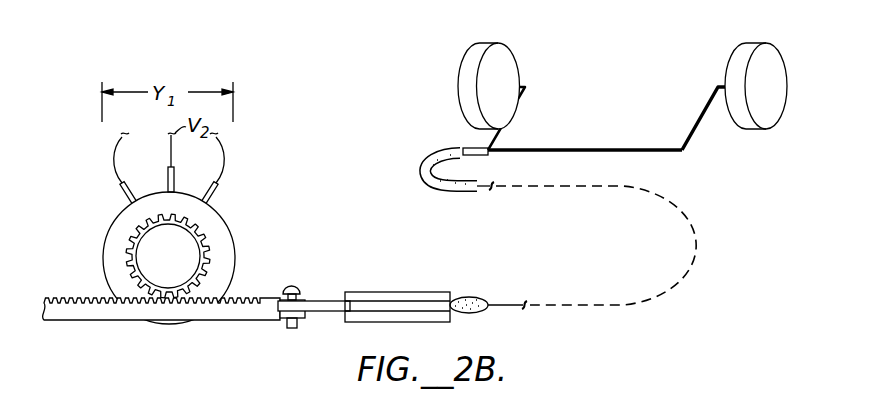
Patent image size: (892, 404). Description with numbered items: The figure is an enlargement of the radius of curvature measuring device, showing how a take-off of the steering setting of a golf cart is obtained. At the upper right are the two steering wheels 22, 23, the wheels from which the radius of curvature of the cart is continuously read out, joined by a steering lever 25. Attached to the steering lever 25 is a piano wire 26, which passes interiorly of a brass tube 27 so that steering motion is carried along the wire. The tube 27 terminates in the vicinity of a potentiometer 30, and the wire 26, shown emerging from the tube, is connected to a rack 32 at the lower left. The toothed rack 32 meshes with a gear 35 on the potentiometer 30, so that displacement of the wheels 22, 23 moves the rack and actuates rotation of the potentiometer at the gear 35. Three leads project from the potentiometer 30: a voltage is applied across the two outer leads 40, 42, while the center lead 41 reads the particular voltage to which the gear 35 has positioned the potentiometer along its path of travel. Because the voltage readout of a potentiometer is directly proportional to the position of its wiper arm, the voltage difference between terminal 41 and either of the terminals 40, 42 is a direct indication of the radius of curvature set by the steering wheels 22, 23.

The steering wheel 22 is at (481, 48).
The steering wheel 23 is at (748, 48).
The steering lever 25 is at (607, 152).
The piano wire 26 is at (470, 148).
The brass tube 27 is at (422, 172).
The potentiometer 30 is at (103, 262).
The rack 32 is at (70, 314).
The gear 35 is at (185, 250).
The lead 40 is at (118, 186).
The lead 41 is at (167, 173).
The lead 42 is at (220, 190).